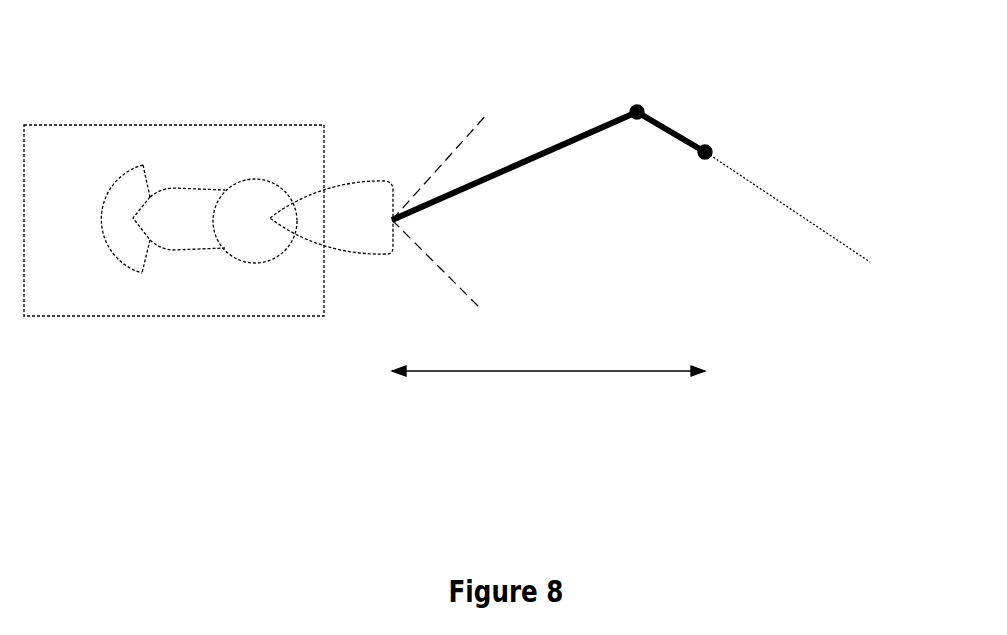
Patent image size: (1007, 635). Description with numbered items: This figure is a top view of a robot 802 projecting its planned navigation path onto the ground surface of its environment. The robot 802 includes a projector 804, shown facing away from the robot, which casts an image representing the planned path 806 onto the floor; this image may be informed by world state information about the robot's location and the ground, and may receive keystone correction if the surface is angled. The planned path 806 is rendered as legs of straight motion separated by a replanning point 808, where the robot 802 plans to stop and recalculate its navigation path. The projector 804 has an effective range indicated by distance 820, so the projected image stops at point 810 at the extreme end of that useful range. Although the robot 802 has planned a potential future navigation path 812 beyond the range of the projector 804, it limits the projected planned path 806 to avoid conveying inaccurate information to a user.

The robot 802 is at (105, 110).
The projector 804 is at (366, 176).
The planned path 806 is at (582, 112).
The replanning point 808 is at (650, 102).
The point at extreme end of useful range 810 is at (715, 140).
The potential future navigation path 812 is at (813, 213).
The distance 820 is at (553, 383).